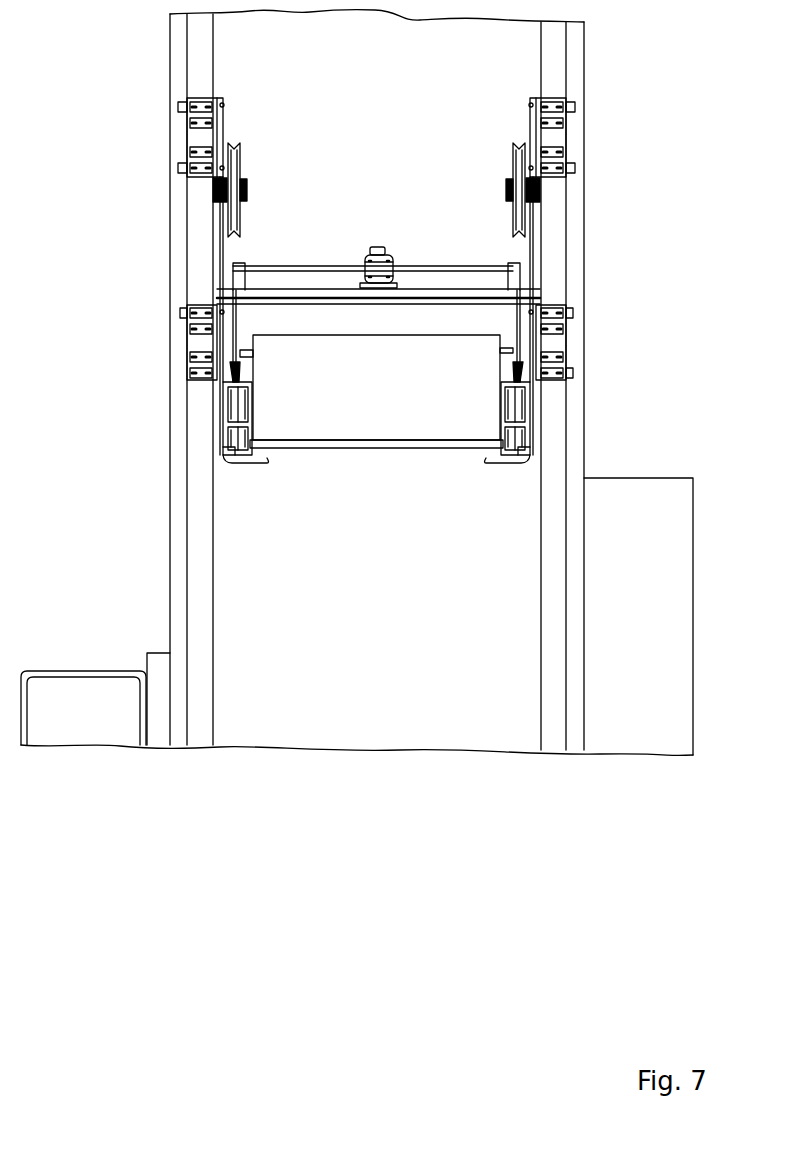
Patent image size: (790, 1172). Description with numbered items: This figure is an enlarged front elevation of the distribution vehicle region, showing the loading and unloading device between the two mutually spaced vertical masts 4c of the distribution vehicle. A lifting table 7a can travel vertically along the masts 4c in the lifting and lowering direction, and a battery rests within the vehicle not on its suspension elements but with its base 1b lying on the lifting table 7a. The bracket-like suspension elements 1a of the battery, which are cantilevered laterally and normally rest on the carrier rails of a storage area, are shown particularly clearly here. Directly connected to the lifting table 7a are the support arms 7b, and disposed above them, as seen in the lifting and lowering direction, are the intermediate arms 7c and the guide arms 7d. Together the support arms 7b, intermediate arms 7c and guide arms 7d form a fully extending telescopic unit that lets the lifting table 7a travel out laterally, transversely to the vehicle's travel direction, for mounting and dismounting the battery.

The support elements 1a is at (510, 345).
The base 1b is at (420, 445).
The vertical masts 4c is at (198, 447).
The lifting table 7a is at (367, 450).
The support arms 7b is at (522, 437).
The intermediate arms 7c is at (522, 410).
The guide arms 7d is at (323, 353).